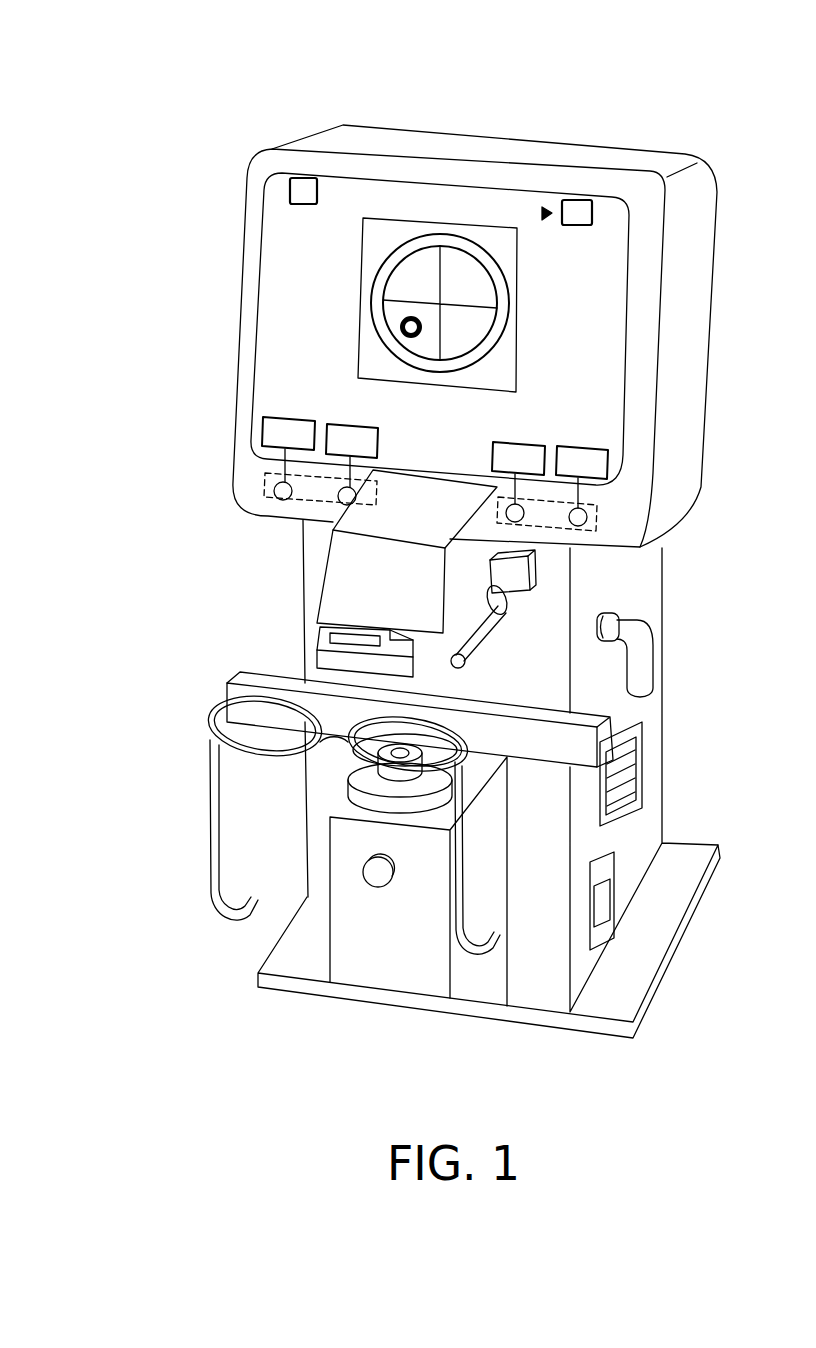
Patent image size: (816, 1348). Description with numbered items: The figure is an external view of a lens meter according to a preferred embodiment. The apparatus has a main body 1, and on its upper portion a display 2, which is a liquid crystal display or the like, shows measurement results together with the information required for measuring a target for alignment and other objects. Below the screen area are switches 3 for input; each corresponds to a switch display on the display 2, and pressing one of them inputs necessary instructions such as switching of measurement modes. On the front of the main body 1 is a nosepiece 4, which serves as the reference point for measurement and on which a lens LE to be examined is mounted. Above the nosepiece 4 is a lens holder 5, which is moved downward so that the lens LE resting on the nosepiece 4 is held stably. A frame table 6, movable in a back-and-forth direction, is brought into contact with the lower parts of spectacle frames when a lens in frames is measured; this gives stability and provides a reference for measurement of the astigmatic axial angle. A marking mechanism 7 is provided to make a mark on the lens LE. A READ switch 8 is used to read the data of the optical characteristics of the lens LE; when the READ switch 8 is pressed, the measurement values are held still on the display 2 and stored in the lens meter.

The main body 1 is at (603, 115).
The display 2 is at (287, 382).
The switches 3 is at (268, 485).
The nosepiece 4 is at (345, 782).
The lens holder 5 is at (315, 630).
The frame table 6 is at (238, 695).
The marking mechanism 7 is at (493, 633).
The READ switch 8 is at (376, 872).
The lens to be examined LE is at (428, 730).